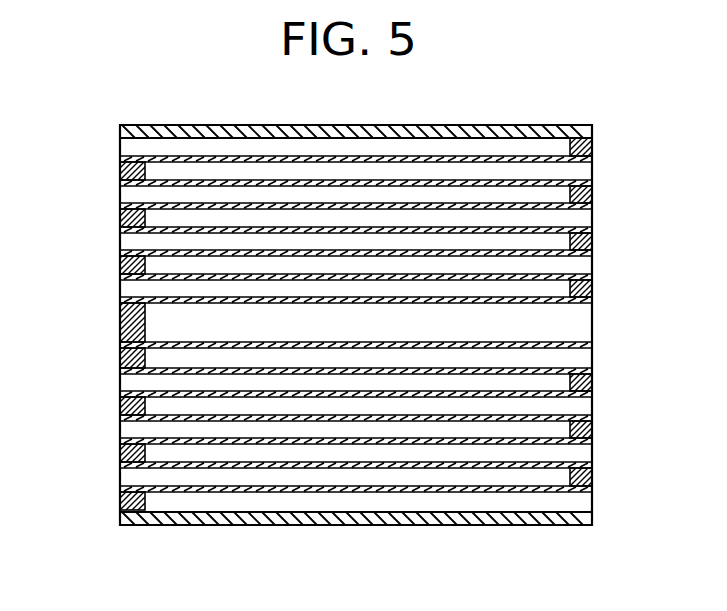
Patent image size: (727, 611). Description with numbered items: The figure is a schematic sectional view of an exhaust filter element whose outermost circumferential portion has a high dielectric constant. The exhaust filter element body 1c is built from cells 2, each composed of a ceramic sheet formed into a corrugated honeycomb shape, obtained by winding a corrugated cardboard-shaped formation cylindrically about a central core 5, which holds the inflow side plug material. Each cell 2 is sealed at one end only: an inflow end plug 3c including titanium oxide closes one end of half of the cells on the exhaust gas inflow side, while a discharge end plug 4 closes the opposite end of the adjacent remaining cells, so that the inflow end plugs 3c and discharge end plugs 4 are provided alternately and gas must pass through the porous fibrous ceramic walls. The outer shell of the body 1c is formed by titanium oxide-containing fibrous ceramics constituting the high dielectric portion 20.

The exhaust filter element body 1c is at (462, 126).
The cell 2 is at (372, 190).
The inflow end plug 3c is at (120, 455).
The discharge end plug 4 is at (594, 432).
The core 5 is at (120, 322).
The high dielectric portion 20 is at (387, 525).